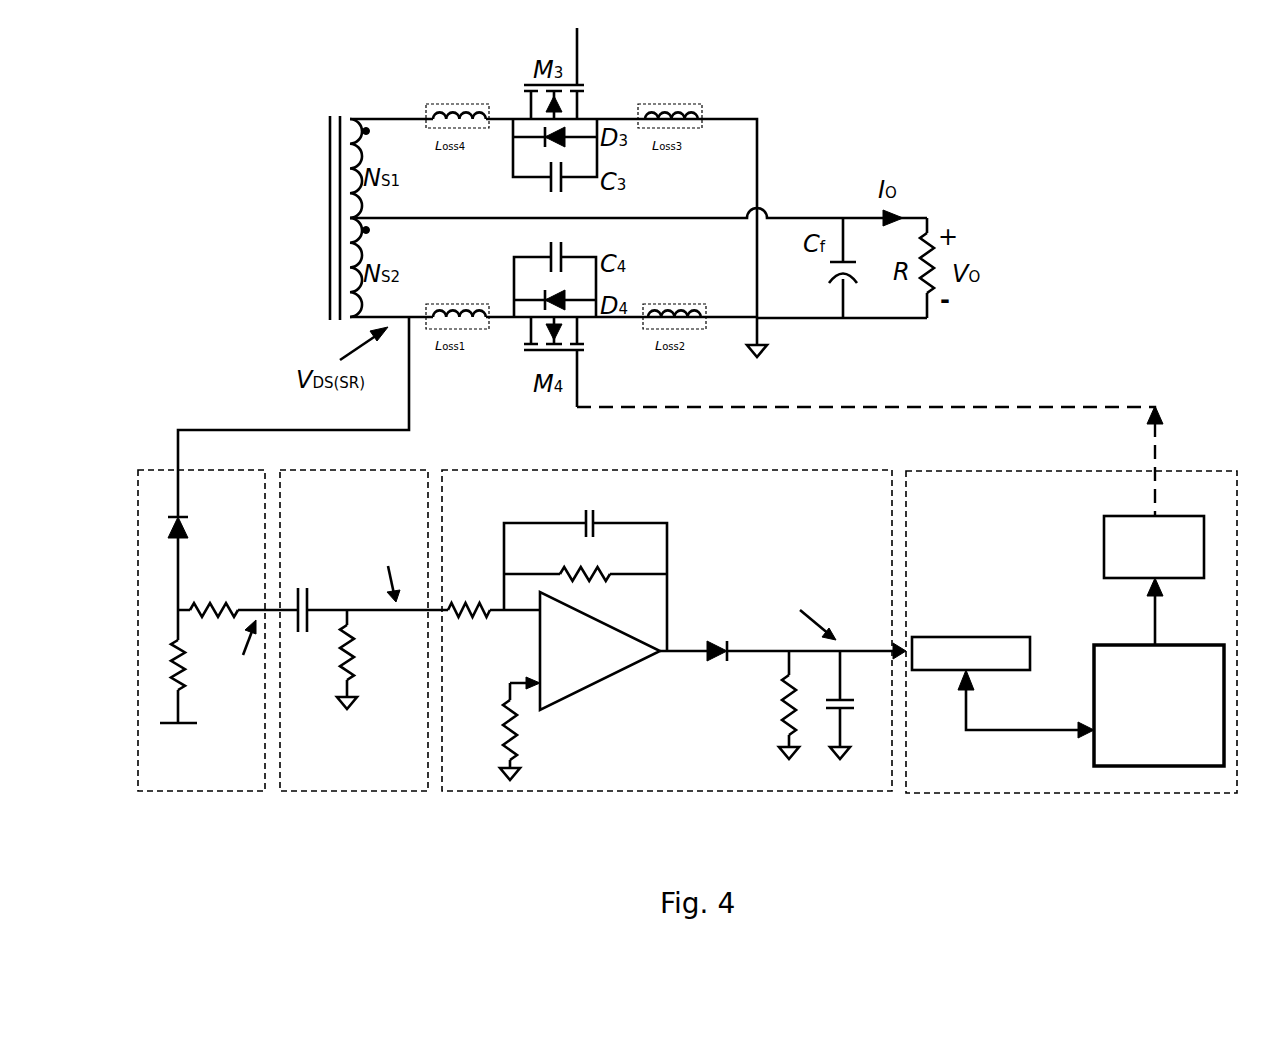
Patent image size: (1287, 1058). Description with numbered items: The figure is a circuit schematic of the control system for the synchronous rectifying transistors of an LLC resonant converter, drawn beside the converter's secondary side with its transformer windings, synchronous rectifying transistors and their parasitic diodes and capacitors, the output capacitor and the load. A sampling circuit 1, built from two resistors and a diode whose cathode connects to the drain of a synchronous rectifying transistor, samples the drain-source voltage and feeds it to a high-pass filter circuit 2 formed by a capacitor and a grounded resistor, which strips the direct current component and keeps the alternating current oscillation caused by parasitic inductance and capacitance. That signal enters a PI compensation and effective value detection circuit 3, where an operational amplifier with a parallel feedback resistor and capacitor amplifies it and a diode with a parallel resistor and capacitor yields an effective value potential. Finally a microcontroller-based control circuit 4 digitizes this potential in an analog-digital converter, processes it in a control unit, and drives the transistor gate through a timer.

The sampling circuit 1 is at (208, 760).
The high-pass filter circuit 2 is at (353, 760).
The PI compensation and effective value detection circuit 3 is at (667, 762).
The control circuit having MCU as a core 4 is at (1068, 762).